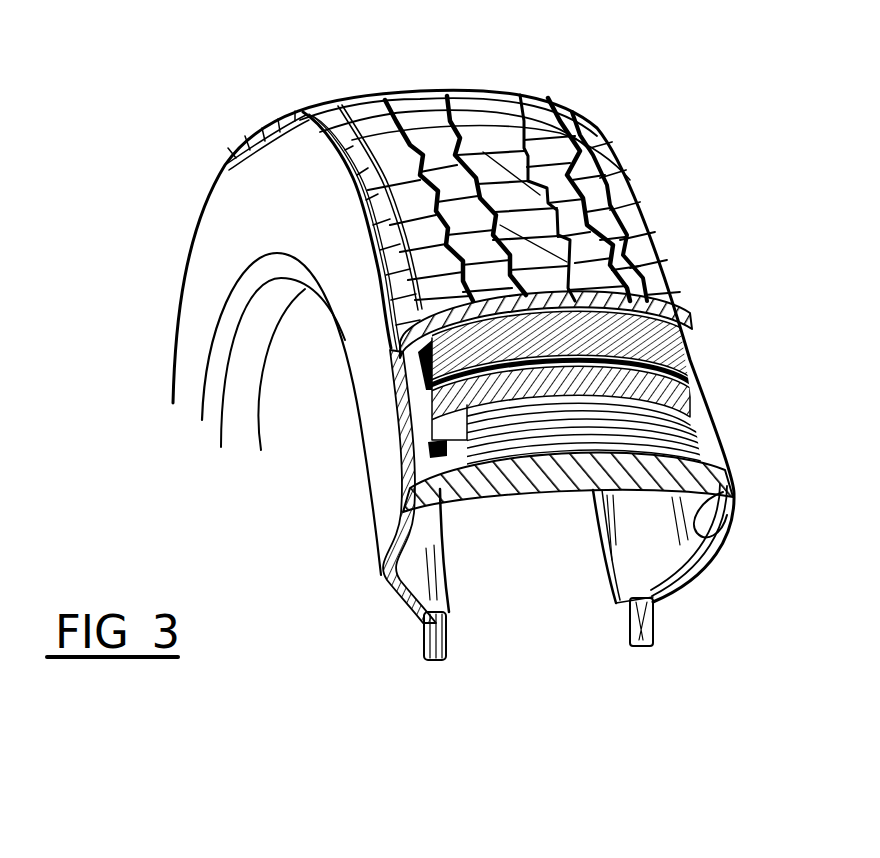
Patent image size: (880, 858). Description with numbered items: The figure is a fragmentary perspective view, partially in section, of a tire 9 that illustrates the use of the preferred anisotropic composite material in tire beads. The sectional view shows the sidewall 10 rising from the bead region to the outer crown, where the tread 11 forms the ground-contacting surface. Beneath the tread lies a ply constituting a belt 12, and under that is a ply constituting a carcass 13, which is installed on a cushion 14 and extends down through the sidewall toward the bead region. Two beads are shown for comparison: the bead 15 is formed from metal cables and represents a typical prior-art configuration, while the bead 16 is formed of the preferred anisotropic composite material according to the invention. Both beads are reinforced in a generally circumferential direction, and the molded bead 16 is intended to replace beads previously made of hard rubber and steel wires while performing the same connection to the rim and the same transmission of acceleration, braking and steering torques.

The tire 9 is at (208, 277).
The sidewall 10 is at (226, 160).
The tread 11 is at (597, 148).
The belt 12 is at (678, 325).
The carcass 13 is at (702, 432).
The cushion 14 is at (722, 545).
The bead 15 is at (420, 645).
The bead 16 is at (645, 648).